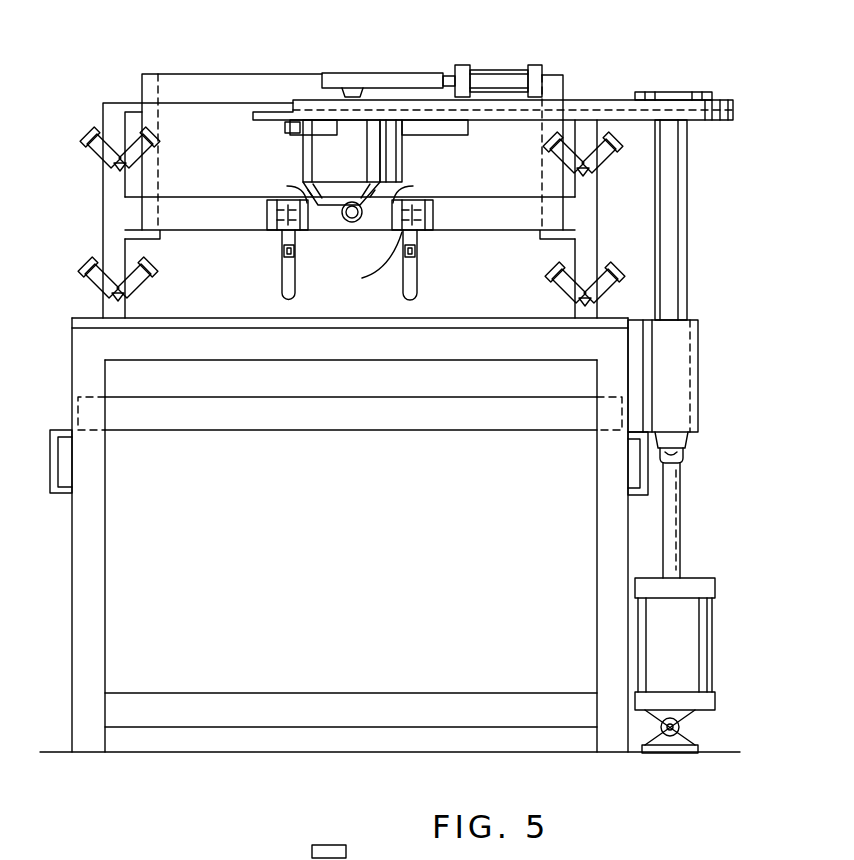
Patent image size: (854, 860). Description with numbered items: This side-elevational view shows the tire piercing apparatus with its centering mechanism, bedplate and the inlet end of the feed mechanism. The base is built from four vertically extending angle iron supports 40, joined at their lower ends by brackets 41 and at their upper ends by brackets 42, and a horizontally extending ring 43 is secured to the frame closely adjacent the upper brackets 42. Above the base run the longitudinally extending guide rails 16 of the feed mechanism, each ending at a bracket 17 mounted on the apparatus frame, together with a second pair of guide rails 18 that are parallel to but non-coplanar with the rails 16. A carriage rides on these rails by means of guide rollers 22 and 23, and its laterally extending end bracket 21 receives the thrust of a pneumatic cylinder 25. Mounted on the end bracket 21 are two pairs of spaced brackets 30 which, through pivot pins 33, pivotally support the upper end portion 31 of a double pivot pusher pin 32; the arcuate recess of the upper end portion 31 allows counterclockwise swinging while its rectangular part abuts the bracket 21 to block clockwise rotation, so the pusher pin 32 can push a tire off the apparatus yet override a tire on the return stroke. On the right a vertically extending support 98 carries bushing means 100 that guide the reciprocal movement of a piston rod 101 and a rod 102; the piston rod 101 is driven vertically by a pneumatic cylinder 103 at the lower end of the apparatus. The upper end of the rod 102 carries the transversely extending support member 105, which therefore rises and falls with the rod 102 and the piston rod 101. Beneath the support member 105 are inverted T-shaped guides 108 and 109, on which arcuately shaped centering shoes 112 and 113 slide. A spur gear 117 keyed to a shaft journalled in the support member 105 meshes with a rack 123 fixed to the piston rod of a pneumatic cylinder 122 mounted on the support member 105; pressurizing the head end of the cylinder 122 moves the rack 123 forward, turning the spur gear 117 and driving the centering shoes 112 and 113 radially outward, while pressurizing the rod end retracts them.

The guide rails 16 is at (112, 168).
The bracket 17 is at (116, 214).
The guide rails 18 is at (122, 290).
The end bracket 21 is at (208, 218).
The guide rollers 22 is at (118, 163).
The guide rollers 23 is at (115, 290).
The pneumatic cylinder 25 is at (354, 222).
The spaced brackets 30 is at (272, 200).
The upper end portion 31 is at (295, 232).
The double pivot pusher pin 32 is at (278, 292).
The pivot pins 33 is at (281, 237).
The angle iron supports 40 is at (93, 638).
The brackets 41 is at (358, 707).
The brackets 42 is at (347, 342).
The ring 43 is at (355, 418).
The vertically extending support 98 is at (637, 358).
The bushing means 100 is at (680, 387).
The piston rod 101 is at (670, 552).
The rod 102 is at (675, 255).
The pneumatic cylinder 103 is at (675, 670).
The support member 105 is at (615, 108).
The inverted T-shaped guide 108 is at (478, 137).
The inverted T-shaped guide 109 is at (288, 130).
The centering shoe 112 is at (390, 148).
The centering shoe 113 is at (316, 158).
The spur gear 117 is at (392, 73).
The pneumatic cylinder 122 is at (498, 80).
The rack 123 is at (418, 73).